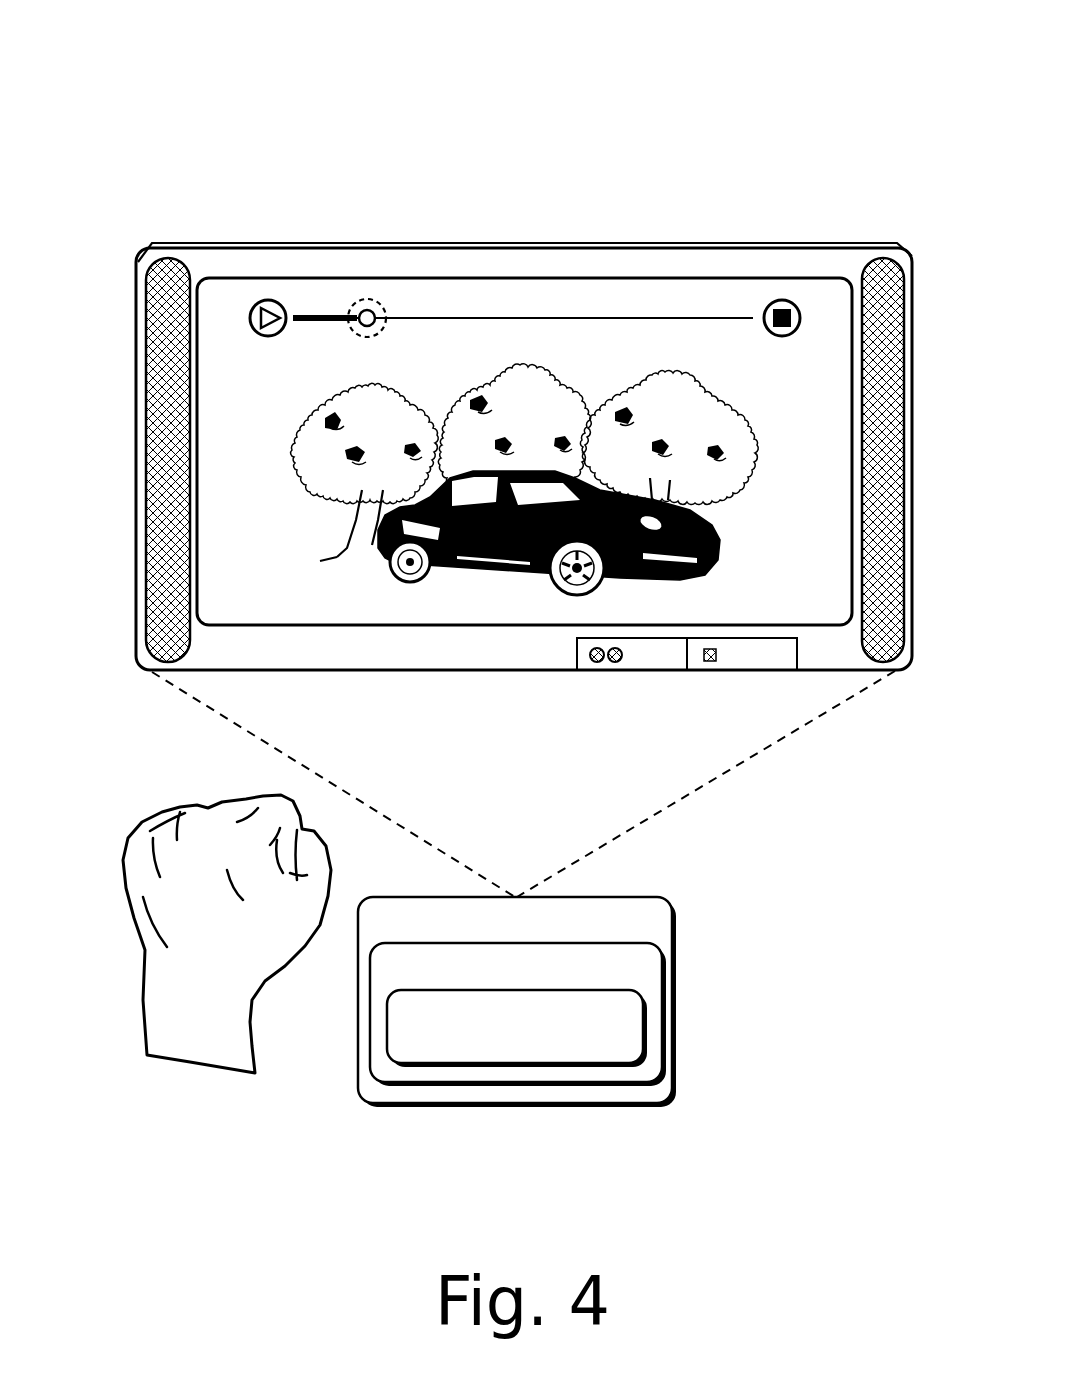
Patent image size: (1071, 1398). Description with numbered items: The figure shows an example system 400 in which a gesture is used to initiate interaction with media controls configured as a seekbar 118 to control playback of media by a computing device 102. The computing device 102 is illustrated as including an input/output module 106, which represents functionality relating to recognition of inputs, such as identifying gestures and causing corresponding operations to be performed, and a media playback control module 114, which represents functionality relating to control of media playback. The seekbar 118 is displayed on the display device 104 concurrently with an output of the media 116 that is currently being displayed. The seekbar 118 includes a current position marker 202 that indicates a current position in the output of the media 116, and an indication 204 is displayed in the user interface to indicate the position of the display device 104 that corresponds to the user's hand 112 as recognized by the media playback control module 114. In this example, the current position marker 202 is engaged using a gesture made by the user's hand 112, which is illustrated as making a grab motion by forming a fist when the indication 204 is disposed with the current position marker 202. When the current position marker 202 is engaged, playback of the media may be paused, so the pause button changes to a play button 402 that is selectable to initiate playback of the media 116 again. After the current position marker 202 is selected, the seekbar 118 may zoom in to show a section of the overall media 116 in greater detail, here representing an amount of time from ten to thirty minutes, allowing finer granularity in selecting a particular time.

The example system 400 is at (184, 66).
The seekbar 118 is at (272, 212).
The display device 104 is at (524, 451).
The media 116 is at (758, 399).
The play button 402 is at (262, 302).
The current position marker 202 is at (375, 310).
The indication 204 is at (378, 325).
The user's hand 112 is at (227, 934).
The computing device 102 is at (517, 1002).
The input/output module 106 is at (518, 1014).
The media playback control module 114 is at (517, 1028).